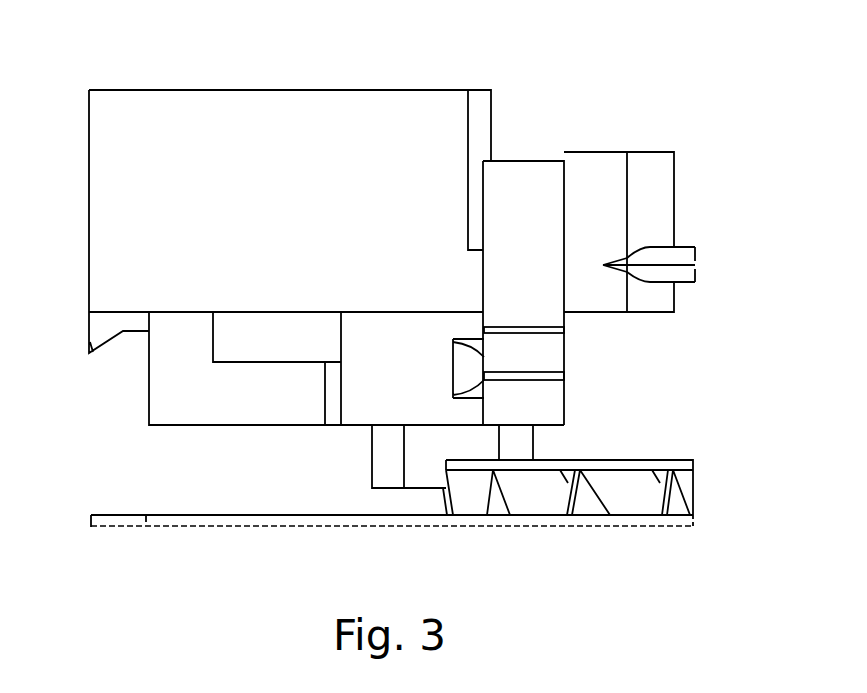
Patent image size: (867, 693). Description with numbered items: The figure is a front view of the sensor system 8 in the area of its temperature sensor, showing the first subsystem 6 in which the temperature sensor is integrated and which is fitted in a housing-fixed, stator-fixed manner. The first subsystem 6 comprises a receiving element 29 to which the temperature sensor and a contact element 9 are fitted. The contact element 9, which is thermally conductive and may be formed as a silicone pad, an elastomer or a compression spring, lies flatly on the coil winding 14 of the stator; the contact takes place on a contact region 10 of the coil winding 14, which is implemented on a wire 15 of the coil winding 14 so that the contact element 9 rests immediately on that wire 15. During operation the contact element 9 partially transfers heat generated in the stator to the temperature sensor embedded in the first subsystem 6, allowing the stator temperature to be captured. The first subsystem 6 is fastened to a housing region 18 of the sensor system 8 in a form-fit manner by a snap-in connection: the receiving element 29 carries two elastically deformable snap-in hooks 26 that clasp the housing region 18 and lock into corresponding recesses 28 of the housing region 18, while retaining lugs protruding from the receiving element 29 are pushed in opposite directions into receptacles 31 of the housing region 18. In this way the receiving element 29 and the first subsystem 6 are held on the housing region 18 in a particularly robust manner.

The first subsystem 6 is at (144, 446).
The sensor system 8 is at (700, 127).
The contact element 9 is at (388, 462).
The contact region 10 is at (573, 439).
The coil winding 14 is at (671, 450).
The wire 15 is at (467, 488).
The housing region 18 is at (408, 158).
The snap-in hooks 26 is at (517, 193).
The recesses 28 is at (570, 190).
The receiving element 29 is at (362, 388).
The receptacles 31 is at (261, 337).